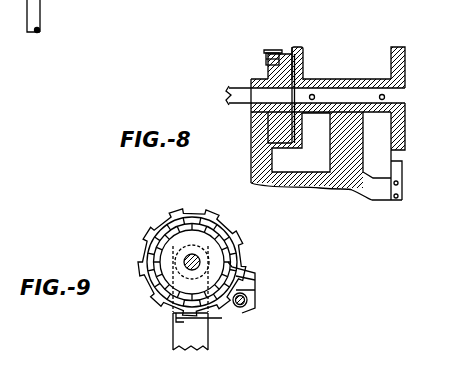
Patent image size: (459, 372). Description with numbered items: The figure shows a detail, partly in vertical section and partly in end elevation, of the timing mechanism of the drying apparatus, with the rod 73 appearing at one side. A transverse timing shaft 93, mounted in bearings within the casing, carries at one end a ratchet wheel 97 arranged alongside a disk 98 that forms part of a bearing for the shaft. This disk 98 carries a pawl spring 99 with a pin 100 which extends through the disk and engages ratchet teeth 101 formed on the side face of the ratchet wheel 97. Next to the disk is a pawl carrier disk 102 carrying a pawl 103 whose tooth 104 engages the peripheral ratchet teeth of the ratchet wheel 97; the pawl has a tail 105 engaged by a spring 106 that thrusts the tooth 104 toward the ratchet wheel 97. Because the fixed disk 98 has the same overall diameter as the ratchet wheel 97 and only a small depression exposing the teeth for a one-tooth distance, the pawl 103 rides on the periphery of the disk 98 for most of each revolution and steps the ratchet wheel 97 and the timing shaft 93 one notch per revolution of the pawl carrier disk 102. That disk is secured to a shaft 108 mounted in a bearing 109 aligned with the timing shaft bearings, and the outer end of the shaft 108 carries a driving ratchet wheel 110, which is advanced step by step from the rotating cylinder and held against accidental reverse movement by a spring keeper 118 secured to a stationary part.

In FIG. 8, the rod 73 is at (43, 14).
In FIG. 8, the transverse timing shaft 93 is at (228, 92).
In FIG. 9, the transverse timing shaft 93 is at (183, 267).
In FIG. 8, the ratchet wheel 97 is at (292, 46).
In FIG. 9, the ratchet wheel 97 is at (190, 213).
In FIG. 8, the disk 98 is at (268, 69).
In FIG. 8, the pawl spring 99 is at (266, 50).
In FIG. 8, the pin 100 is at (270, 52).
In FIG. 9, the pin 100 is at (211, 224).
In FIG. 8, the ratchet teeth 101 is at (304, 50).
In FIG. 9, the ratchet teeth 101 is at (183, 209).
In FIG. 8, the pawl carrier disk 102 is at (316, 138).
In FIG. 9, the pawl 103 is at (251, 284).
In FIG. 9, the tooth 104 is at (235, 272).
In FIG. 9, the tail 105 is at (222, 322).
In FIG. 9, the spring 106 is at (192, 314).
In FIG. 8, the shaft 108 is at (333, 95).
In FIG. 8, the bearing 109 is at (370, 73).
In FIG. 8, the driving ratchet wheel 110 is at (405, 62).
In FIG. 8, the spring keeper 118 is at (396, 165).